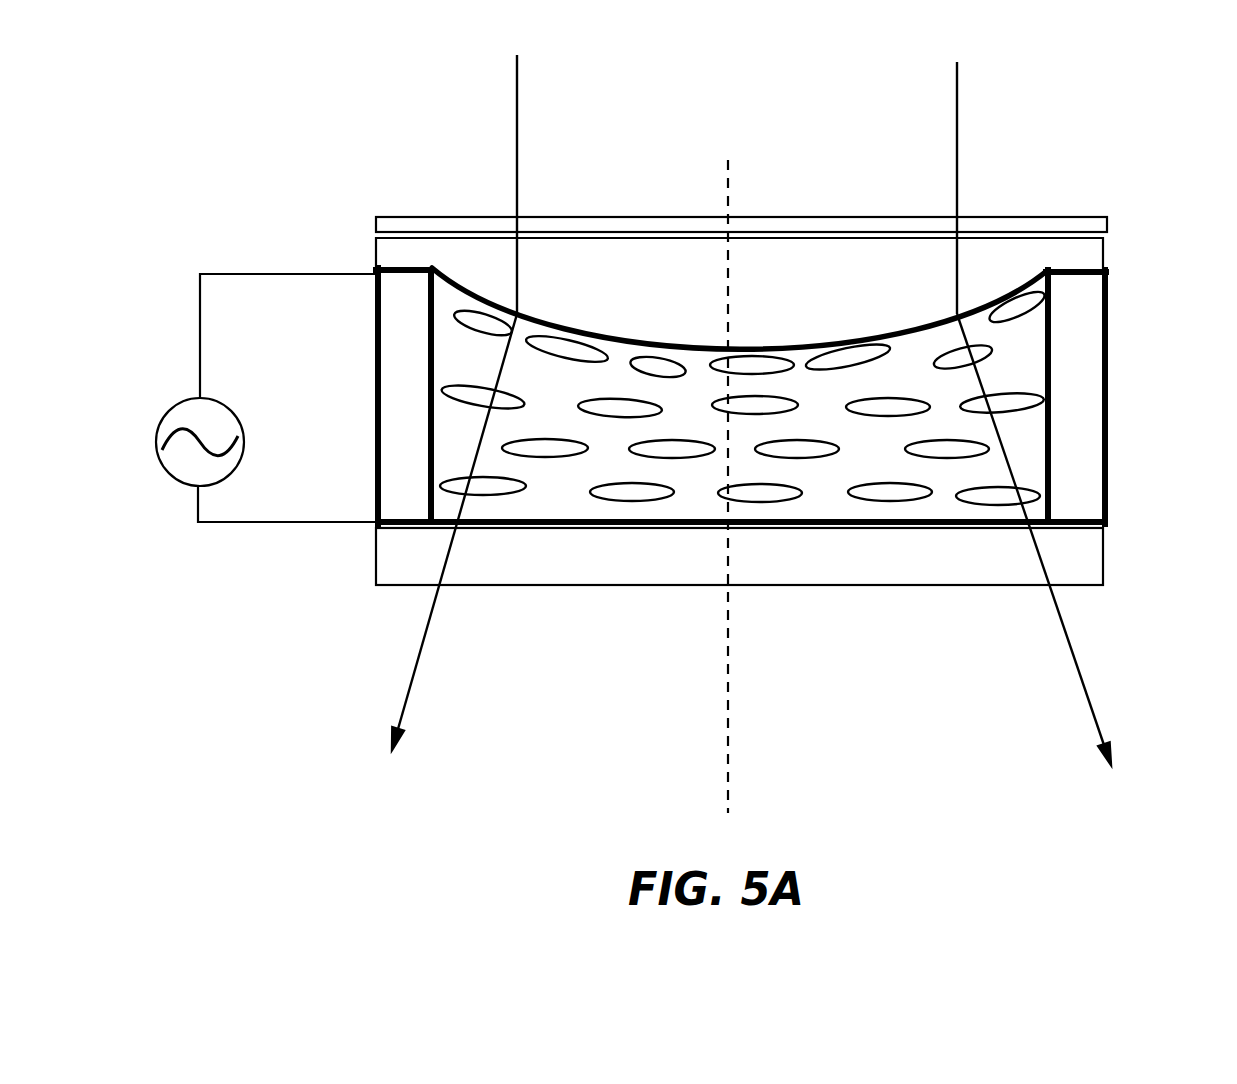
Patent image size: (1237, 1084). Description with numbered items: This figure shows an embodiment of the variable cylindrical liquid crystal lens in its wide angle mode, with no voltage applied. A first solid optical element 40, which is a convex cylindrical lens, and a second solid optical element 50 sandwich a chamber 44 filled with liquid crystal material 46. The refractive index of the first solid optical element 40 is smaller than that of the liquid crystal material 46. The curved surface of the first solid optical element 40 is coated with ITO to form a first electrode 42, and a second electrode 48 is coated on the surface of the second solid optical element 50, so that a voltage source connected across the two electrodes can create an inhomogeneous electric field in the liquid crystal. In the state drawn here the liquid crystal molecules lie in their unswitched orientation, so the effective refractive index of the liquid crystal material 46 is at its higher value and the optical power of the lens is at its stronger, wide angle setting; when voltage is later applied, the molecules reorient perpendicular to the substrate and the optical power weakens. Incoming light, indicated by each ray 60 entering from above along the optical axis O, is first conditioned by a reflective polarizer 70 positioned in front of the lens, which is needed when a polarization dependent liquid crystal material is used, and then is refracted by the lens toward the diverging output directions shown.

The first solid optical element 40 is at (1073, 262).
The first electrode 42 is at (1105, 278).
The chamber 44 is at (1090, 425).
The liquid crystal material 46 is at (1023, 450).
The second electrode 48 is at (1072, 532).
The second solid optical element 50 is at (897, 565).
The ray 60 is at (518, 135).
The polarizer 70 is at (1052, 217).
The optical axis O is at (729, 687).